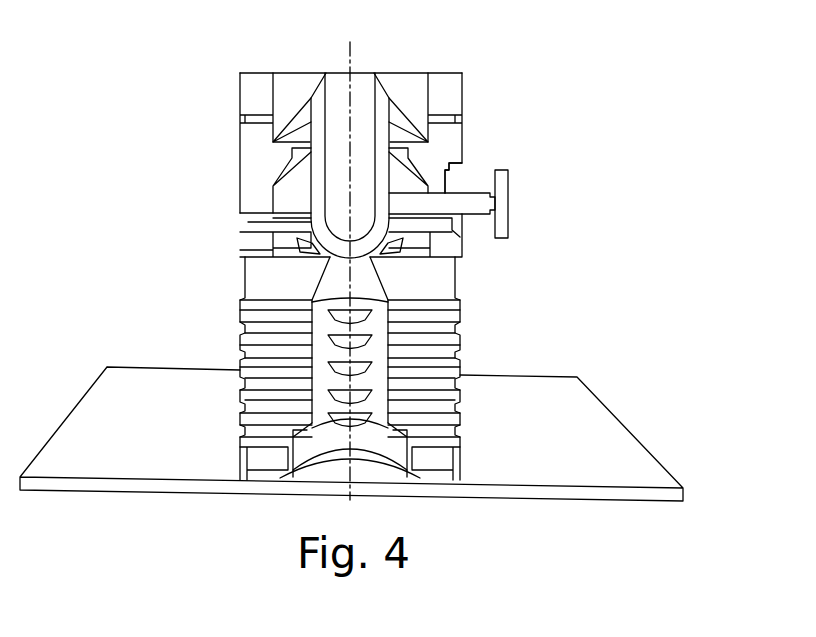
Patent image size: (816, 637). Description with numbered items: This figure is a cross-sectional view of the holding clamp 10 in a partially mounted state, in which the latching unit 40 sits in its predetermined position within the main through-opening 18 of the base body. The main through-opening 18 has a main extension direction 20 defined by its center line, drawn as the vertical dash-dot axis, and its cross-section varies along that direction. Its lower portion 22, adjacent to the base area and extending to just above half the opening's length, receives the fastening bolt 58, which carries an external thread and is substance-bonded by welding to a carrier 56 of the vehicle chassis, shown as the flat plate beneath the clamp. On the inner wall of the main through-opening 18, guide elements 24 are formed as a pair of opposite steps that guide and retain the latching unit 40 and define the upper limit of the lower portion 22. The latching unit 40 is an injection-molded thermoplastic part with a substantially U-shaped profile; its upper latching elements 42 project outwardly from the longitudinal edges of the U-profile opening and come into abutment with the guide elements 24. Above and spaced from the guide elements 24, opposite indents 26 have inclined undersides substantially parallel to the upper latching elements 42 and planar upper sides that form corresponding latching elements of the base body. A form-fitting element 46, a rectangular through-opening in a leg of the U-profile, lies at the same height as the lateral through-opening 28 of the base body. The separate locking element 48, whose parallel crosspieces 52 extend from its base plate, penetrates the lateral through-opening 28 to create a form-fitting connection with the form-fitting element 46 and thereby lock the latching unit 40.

The holding clamp 10 is at (580, 34).
The main through-opening 18 is at (410, 96).
The main extension direction 20 is at (350, 42).
The lower portion 22 is at (440, 288).
The guide elements 24 is at (287, 223).
The indents 26 is at (291, 148).
The lateral through-opening 28 is at (458, 184).
The latching unit 40 is at (325, 98).
The upper latching elements 42 is at (307, 120).
The form-fitting element 46 is at (385, 203).
The separate locking element 48 is at (511, 204).
The crosspieces 52 is at (470, 210).
The carrier 56 is at (620, 457).
The fastening bolt 58 is at (330, 350).